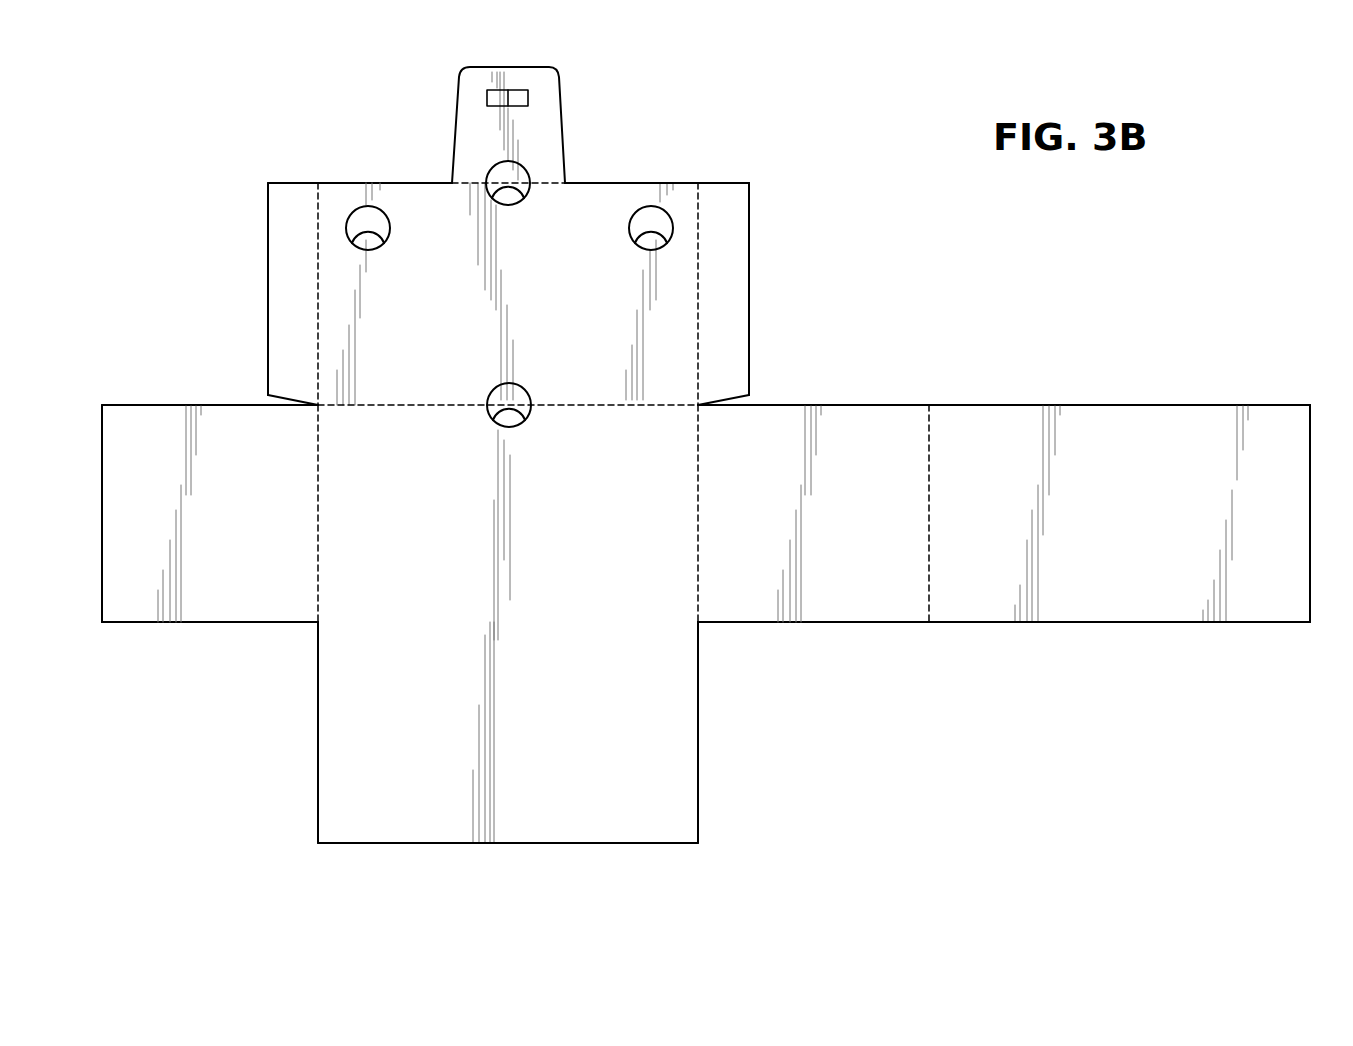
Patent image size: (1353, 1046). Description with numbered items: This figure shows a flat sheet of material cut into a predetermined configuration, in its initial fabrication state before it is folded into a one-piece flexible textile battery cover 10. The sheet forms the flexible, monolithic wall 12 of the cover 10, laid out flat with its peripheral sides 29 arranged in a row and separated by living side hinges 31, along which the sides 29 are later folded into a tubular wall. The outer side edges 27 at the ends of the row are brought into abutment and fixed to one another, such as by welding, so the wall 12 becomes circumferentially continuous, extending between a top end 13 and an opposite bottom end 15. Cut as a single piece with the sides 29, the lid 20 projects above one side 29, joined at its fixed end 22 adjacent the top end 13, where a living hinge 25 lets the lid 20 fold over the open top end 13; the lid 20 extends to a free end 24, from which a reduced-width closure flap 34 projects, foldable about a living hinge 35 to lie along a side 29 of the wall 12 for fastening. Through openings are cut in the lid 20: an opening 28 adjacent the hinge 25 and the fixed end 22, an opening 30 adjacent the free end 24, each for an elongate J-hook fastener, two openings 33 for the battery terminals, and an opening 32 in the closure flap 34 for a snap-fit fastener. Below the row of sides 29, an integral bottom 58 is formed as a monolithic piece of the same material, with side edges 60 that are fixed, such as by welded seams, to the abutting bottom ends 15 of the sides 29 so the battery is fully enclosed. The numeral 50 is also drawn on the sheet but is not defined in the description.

The cover 10 is at (853, 210).
The wall 12 is at (300, 183).
The top end 13 is at (1010, 405).
The bottom end 15 is at (983, 622).
The lid 20 is at (683, 310).
The fixed end 22 is at (584, 403).
The free end 24 is at (645, 183).
The living hinge 25 is at (408, 405).
The side edges 27 is at (100, 610).
The opening 28 is at (516, 417).
The sides 29 is at (245, 585).
The opening 30 is at (520, 200).
The living side hinges 31 is at (320, 540).
The opening 32 is at (507, 90).
The openings 33 is at (375, 240).
The closure flap 34 is at (563, 97).
The living hinge 35 is at (540, 183).
The side edge 50 is at (287, 305).
The bottom 58 is at (675, 752).
The side edges 60 is at (318, 783).